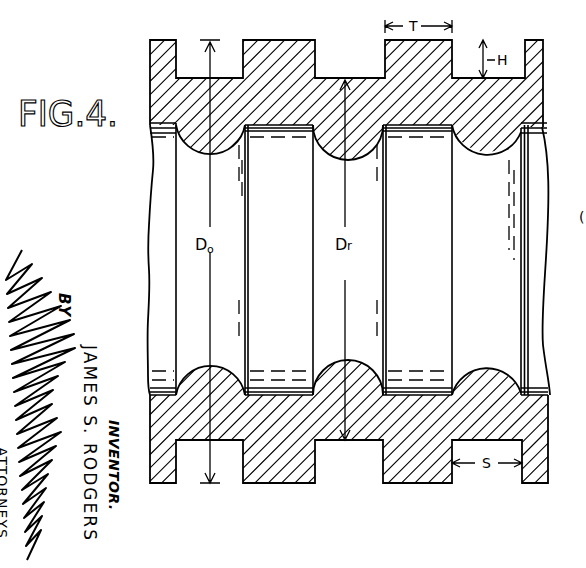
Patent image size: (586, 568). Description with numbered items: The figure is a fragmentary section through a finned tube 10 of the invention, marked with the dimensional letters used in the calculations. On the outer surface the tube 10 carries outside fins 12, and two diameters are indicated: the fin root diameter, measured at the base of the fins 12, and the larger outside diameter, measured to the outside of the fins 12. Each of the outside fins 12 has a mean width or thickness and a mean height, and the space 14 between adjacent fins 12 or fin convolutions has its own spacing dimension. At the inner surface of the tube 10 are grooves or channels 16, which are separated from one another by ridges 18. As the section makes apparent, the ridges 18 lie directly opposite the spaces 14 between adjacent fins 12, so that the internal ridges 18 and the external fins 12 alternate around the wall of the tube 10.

The tube 10 is at (161, 218).
The outside fins 12 is at (308, 44).
The space between adjacent fins 14 is at (363, 447).
The grooves or channels 16 is at (273, 395).
The ridges 18 is at (350, 158).